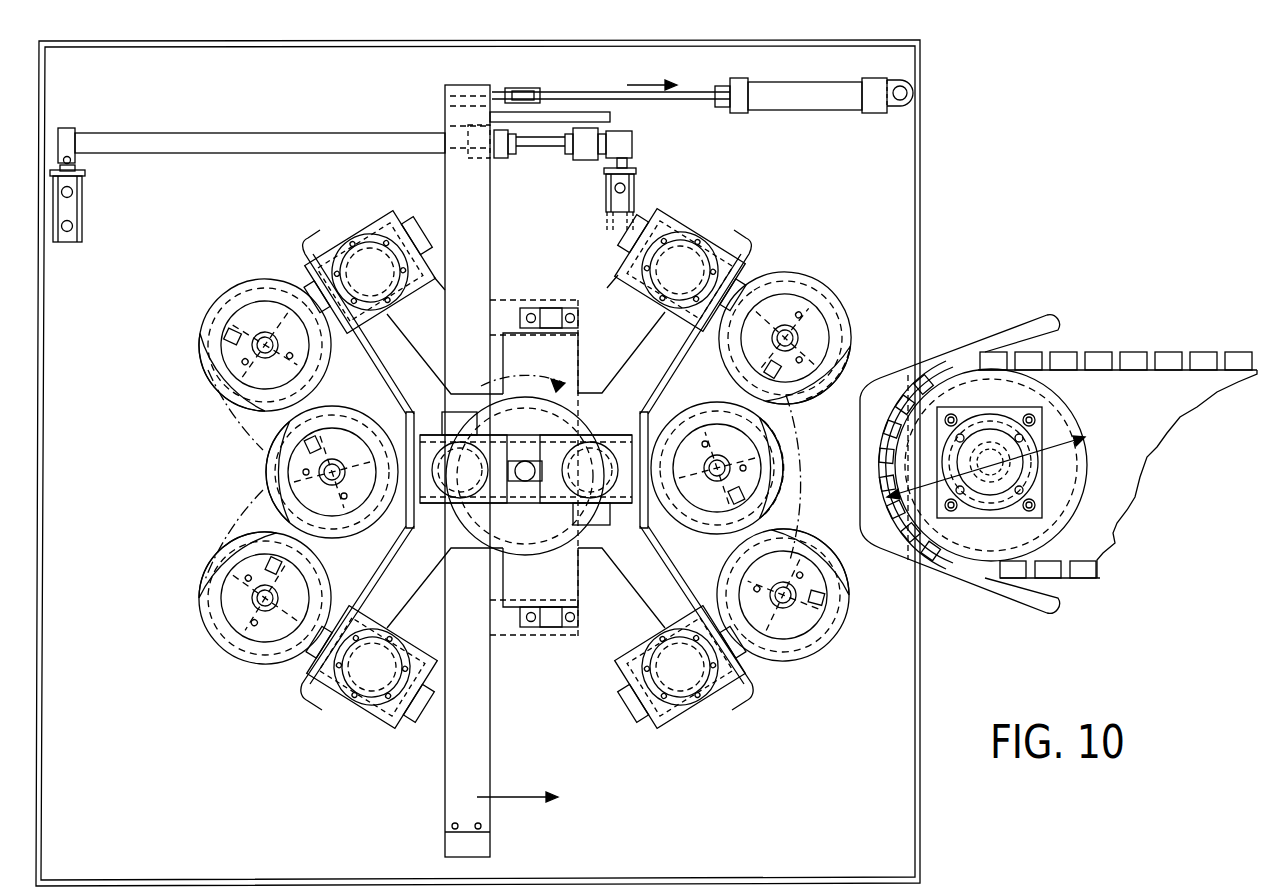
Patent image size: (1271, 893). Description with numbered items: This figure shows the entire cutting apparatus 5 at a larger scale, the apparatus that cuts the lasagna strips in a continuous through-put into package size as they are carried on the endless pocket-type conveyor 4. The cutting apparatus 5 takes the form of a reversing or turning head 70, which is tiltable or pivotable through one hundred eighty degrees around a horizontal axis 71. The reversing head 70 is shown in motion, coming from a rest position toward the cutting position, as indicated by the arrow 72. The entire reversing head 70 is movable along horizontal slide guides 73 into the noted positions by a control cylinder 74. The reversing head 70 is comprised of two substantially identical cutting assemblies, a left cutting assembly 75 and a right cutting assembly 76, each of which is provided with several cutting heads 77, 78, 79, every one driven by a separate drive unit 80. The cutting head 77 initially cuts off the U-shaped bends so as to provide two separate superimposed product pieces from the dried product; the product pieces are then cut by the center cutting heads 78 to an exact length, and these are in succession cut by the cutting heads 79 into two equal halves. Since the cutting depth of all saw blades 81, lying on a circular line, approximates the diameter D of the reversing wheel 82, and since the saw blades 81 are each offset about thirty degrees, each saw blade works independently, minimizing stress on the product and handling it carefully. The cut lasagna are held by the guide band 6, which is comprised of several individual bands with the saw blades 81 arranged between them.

The pocket-type conveyor 4 is at (1136, 352).
The cutting apparatus 5 is at (957, 168).
The guide band 6 is at (950, 352).
The reversing head 70 is at (336, 226).
The horizontal axis 71 is at (586, 578).
The arrow 72 is at (528, 802).
The horizontal slide guides 73 is at (262, 150).
The control cylinder 74 is at (810, 100).
The left cutting assembly 75 is at (254, 467).
The right cutting assembly 76 is at (797, 479).
The cutting head 77 is at (792, 282).
The center cutting head 78 is at (770, 442).
The cutting head 79 is at (793, 655).
The drive unit 80 is at (660, 722).
The saw blades 81 is at (830, 364).
The reversing wheel 82 is at (1083, 500).
The diameter D is at (1082, 450).